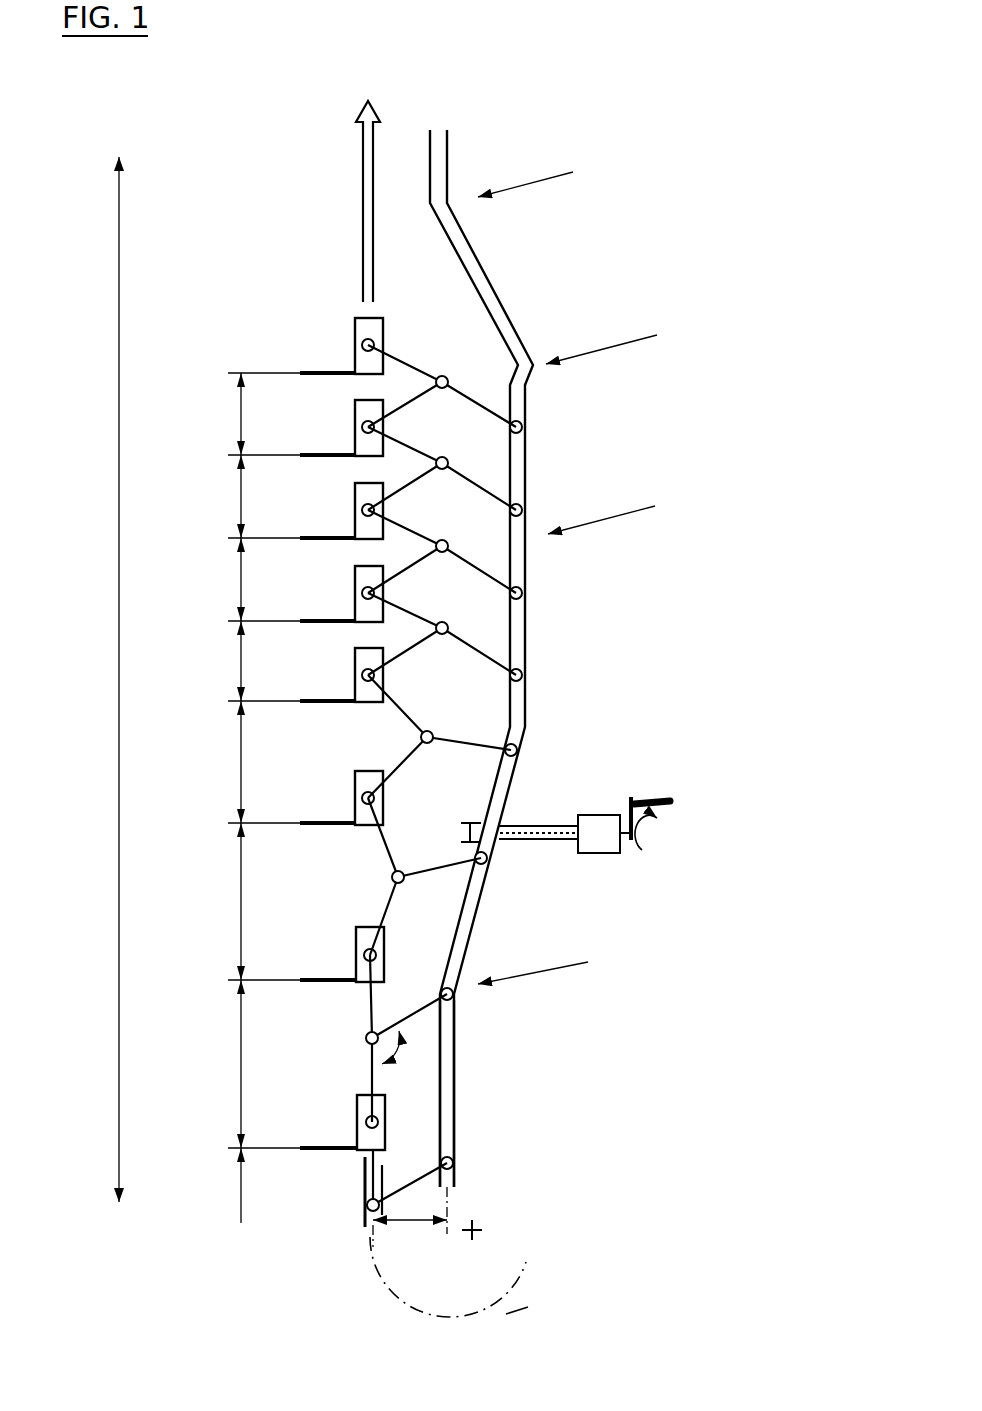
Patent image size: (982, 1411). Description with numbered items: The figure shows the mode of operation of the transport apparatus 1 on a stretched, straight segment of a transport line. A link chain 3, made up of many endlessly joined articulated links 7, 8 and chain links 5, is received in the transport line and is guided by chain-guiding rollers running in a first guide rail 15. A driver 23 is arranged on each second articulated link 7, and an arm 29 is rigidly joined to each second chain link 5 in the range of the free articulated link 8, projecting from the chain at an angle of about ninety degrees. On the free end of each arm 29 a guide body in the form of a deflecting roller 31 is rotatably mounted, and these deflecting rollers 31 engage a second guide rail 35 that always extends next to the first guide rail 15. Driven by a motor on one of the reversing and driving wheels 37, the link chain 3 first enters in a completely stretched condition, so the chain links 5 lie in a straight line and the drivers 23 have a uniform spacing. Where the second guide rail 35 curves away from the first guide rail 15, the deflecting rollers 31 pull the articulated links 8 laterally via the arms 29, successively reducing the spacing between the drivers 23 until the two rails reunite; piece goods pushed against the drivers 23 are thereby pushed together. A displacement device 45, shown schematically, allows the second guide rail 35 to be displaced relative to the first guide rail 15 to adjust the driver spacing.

The transport apparatus 1 is at (711, 216).
The link chain 3 is at (386, 1157).
The chain links 5 is at (402, 758).
The articulated links 7 is at (356, 668).
The free articulated links 8 is at (421, 738).
The first guide rail 15 is at (364, 1190).
The driver 23 is at (331, 1146).
The arm 29 is at (440, 874).
The deflecting rollers 31 is at (490, 866).
The second guide rail 35 is at (525, 632).
The reversing and driving wheels 37 is at (530, 1258).
The displacement device 45 is at (602, 794).